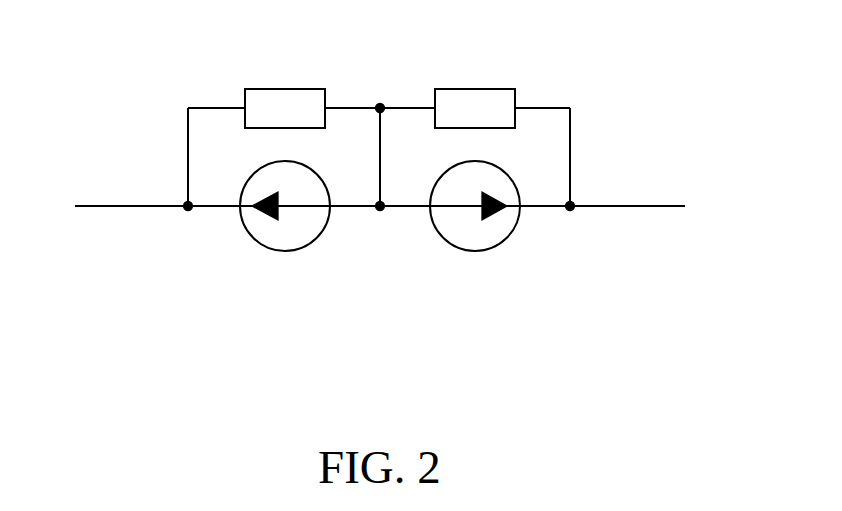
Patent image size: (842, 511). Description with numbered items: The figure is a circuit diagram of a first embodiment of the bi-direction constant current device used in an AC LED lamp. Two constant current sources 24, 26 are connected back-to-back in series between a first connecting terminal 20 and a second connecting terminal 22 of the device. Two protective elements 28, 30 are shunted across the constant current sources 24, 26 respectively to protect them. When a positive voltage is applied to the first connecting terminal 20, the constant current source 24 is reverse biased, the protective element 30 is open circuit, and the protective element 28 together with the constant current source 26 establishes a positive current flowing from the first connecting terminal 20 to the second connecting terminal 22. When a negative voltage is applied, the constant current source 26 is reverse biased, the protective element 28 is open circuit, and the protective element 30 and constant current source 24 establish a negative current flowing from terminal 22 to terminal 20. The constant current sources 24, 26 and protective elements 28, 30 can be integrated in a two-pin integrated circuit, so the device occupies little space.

The first connecting terminal 20 is at (137, 208).
The second connecting terminal 22 is at (617, 208).
The constant current source 24 is at (283, 252).
The constant current source 26 is at (473, 252).
The protective element 28 is at (282, 89).
The protective element 30 is at (471, 89).